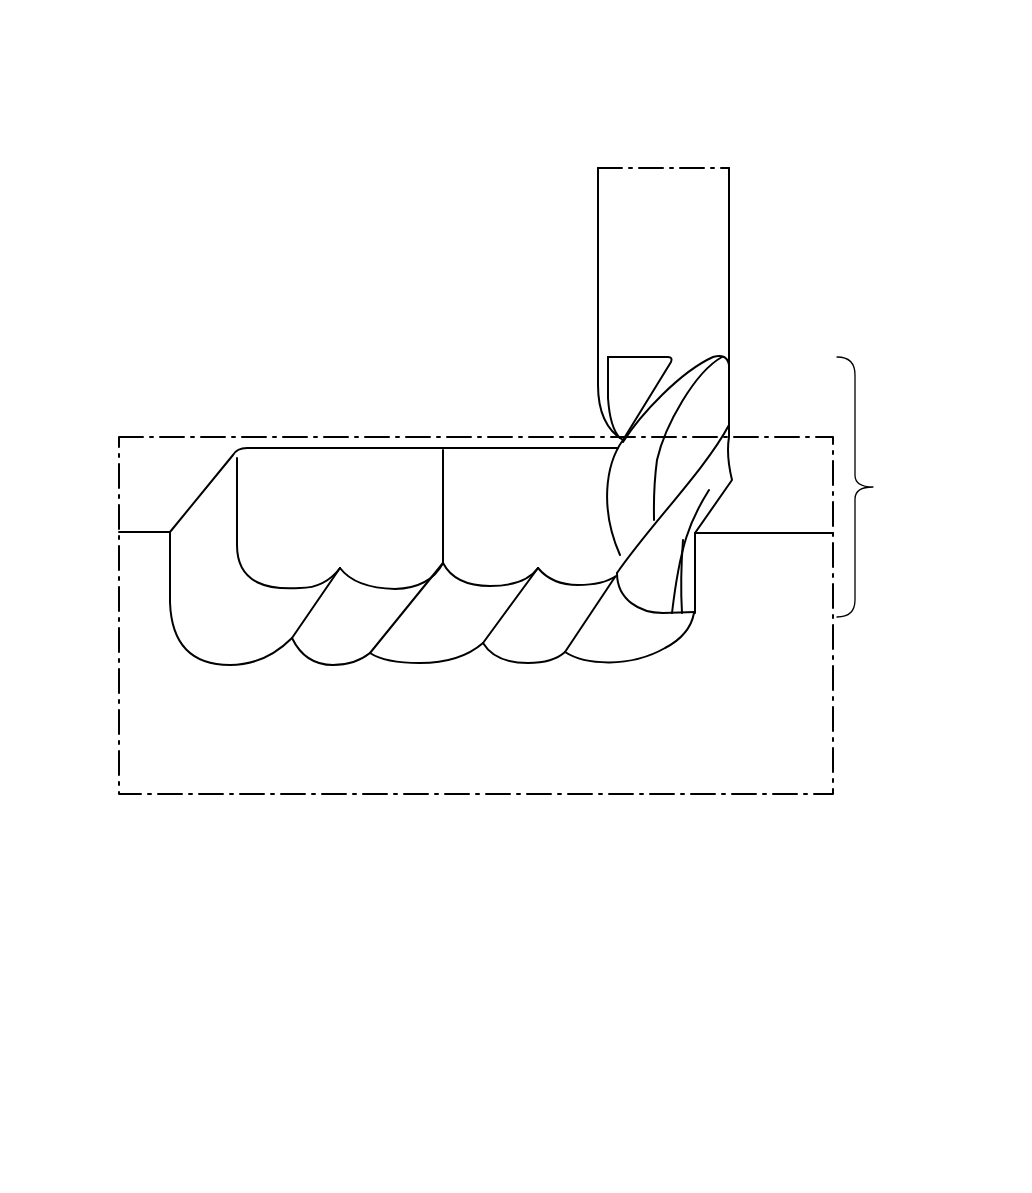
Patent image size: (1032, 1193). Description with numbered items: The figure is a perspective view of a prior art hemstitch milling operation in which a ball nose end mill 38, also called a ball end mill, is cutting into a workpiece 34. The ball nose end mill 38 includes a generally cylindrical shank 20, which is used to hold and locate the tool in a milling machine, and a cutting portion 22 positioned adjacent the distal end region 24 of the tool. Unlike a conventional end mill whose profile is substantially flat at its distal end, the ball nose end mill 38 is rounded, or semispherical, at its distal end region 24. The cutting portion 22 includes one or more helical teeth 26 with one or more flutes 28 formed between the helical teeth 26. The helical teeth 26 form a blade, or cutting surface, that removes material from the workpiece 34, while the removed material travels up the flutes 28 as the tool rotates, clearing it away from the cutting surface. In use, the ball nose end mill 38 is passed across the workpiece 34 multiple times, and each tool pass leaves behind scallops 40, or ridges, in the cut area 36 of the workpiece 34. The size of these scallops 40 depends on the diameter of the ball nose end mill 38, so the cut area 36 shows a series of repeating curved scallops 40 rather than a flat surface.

The shank 20 is at (707, 267).
The cutting portion 22 is at (875, 487).
The distal end region 24 is at (665, 618).
The helical teeth 26 is at (658, 505).
The flutes 28 is at (677, 460).
The workpiece 34 is at (118, 542).
The cut area 36 is at (340, 518).
The ball nose end mill 38 is at (867, 130).
The scallops 40 is at (512, 625).